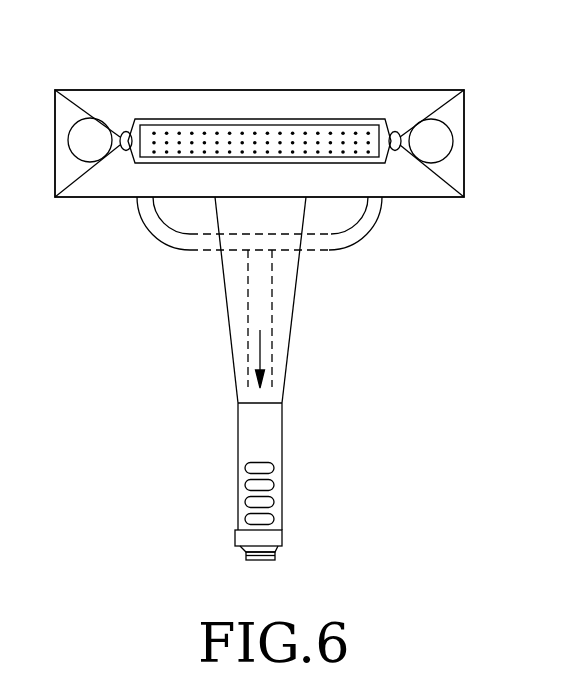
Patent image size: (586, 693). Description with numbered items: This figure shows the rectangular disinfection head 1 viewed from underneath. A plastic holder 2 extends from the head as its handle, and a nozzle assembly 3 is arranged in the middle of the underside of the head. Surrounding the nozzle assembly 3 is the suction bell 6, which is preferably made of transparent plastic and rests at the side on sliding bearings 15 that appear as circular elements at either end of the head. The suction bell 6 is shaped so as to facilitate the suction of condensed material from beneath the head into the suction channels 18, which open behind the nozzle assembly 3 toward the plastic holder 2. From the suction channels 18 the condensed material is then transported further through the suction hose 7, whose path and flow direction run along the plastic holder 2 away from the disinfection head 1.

The disinfection head 1 is at (394, 151).
The plastic holder 2 is at (238, 437).
The nozzle assembly 3 is at (253, 143).
The suction bell 6 is at (464, 90).
The suction hose 7 is at (272, 328).
The sliding bearings 15 is at (444, 146).
The suction nozzle/channel 18 is at (123, 150).